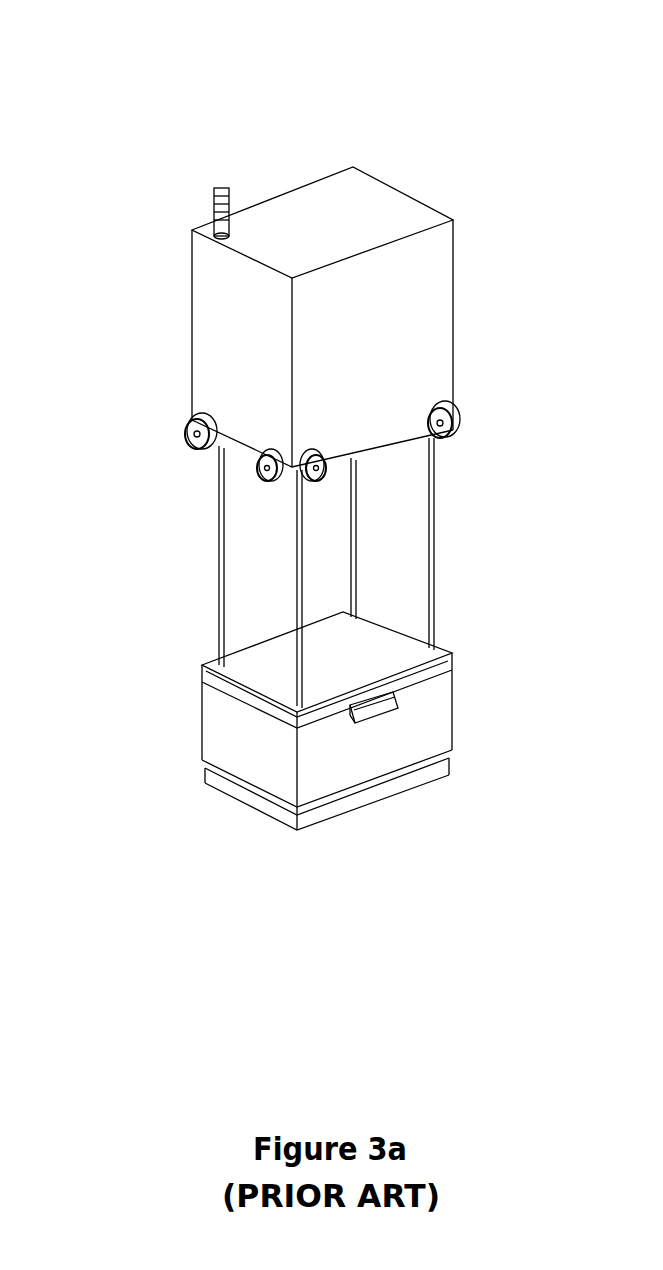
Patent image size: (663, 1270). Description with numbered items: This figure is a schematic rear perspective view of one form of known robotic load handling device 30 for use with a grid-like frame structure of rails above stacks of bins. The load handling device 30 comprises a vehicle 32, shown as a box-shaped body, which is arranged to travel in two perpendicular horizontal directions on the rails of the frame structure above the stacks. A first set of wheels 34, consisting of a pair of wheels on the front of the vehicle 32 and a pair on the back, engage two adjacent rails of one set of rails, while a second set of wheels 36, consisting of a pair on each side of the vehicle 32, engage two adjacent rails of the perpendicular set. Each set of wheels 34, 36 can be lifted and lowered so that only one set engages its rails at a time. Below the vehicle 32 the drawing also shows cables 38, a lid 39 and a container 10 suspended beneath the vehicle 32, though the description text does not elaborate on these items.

The robotic load handling device 30 is at (163, 127).
The vehicle 32 is at (393, 305).
The first set of wheels 34 is at (452, 427).
The second set of wheels 36 is at (202, 422).
The cable 38 is at (432, 547).
The lid 39 is at (398, 655).
The container 10 is at (422, 740).